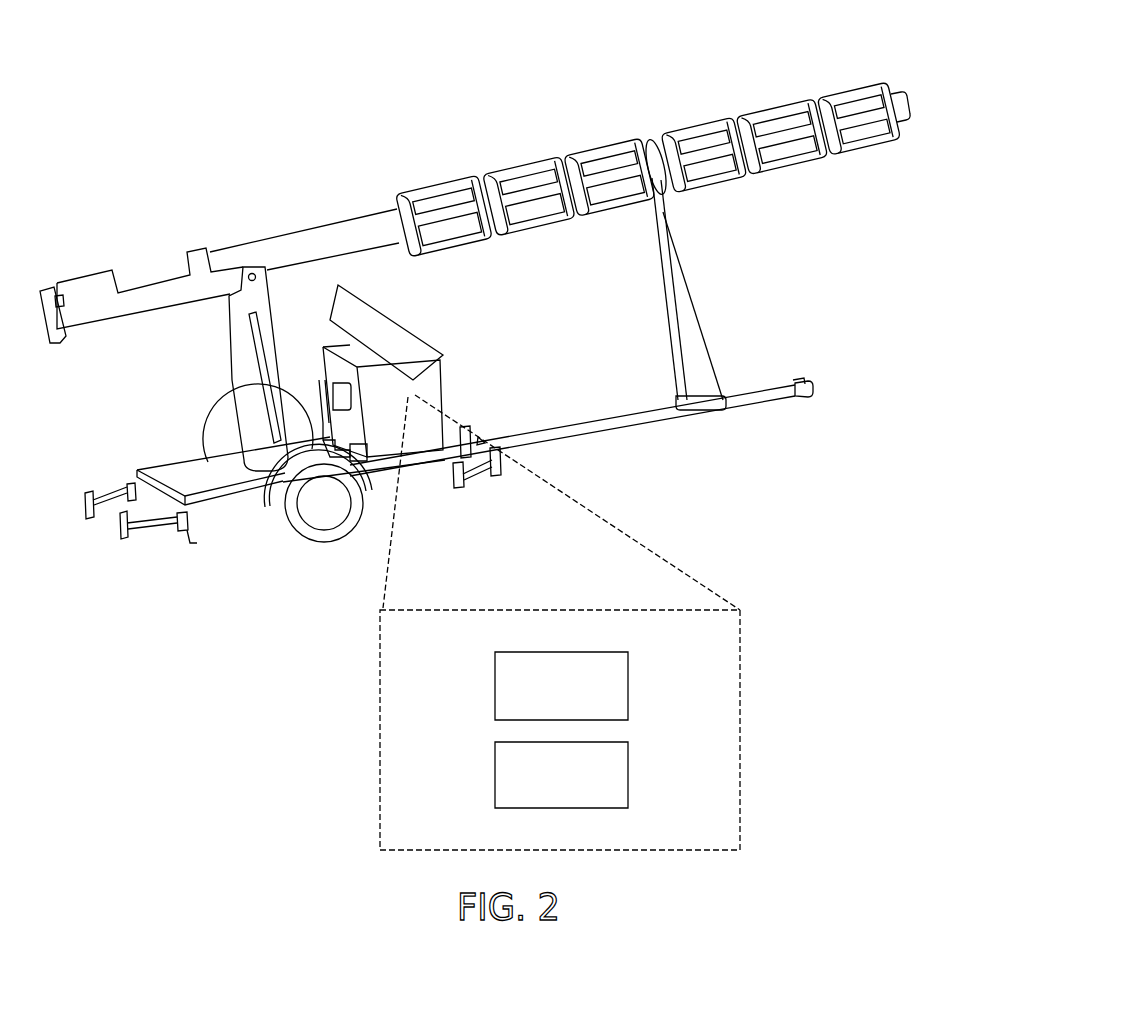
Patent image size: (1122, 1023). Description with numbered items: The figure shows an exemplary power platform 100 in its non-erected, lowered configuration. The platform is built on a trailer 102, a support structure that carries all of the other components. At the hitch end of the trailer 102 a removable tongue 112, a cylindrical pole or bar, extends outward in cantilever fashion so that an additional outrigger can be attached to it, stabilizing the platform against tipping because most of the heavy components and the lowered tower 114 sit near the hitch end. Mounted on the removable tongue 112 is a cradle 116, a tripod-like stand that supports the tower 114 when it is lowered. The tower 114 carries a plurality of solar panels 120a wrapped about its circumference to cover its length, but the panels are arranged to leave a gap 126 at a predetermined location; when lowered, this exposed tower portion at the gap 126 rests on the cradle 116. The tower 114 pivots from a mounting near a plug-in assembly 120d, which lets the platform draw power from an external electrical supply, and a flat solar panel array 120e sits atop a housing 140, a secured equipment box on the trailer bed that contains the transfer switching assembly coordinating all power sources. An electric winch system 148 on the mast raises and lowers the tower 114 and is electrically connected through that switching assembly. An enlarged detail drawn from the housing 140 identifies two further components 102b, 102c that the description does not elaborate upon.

The power platform 100 is at (273, 160).
The trailer 102 is at (228, 527).
The controller 102b is at (561, 686).
The power source 102c is at (561, 775).
The removable tongue 112 is at (763, 404).
The tower 114 is at (353, 217).
The cradle 116 is at (688, 297).
The solar panel 120a is at (503, 167).
The plug-in assembly 120d is at (323, 343).
The flat solar panel array 120e is at (387, 323).
The gap 126 is at (650, 145).
The housing 140 is at (445, 383).
The electric winch system 148 is at (327, 395).